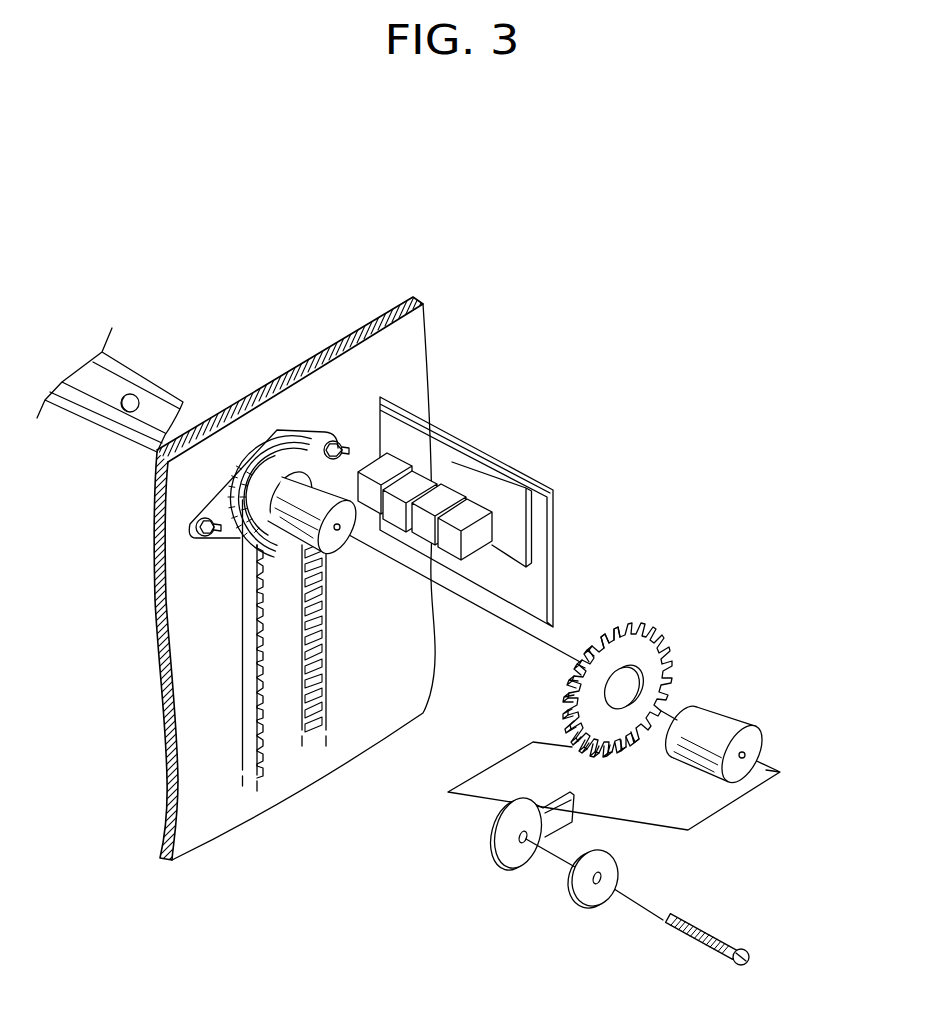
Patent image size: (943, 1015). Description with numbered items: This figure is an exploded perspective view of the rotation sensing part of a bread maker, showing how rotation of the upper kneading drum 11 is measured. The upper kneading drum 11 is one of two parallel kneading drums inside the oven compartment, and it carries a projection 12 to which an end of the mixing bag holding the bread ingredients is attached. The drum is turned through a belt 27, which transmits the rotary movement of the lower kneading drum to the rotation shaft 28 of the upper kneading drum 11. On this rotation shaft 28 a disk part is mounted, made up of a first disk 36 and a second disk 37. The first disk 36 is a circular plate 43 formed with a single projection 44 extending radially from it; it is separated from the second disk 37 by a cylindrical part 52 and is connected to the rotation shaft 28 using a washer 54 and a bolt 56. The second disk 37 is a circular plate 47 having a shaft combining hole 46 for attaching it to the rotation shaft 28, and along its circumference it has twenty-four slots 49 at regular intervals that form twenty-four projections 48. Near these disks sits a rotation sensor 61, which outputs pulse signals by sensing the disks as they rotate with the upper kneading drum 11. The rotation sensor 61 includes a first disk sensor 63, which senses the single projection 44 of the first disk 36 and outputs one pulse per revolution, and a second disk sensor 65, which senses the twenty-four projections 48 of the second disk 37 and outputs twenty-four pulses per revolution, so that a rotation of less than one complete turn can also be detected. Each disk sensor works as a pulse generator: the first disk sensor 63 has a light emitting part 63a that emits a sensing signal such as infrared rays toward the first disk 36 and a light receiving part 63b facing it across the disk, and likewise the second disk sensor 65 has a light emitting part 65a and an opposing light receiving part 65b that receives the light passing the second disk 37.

The upper kneading drum 11 is at (112, 357).
The projection 12 is at (136, 398).
The belt 27 is at (242, 642).
The rotation shaft 28 is at (269, 493).
The first disk 36 is at (520, 901).
The second disk 37 is at (646, 634).
The circular plate 43 is at (512, 867).
The single projection 44 is at (568, 824).
The shaft combining hole 46 is at (640, 675).
The circular plate 47 is at (647, 652).
The projections 48 is at (634, 630).
The slots 49 is at (616, 628).
The cylindrical part 52 is at (745, 723).
The washer 54 is at (603, 897).
The bolt 56 is at (722, 937).
The rotation sensor 61 is at (491, 471).
The first disk sensor 63 is at (518, 469).
The light emitting part 63a is at (480, 506).
The light receiving part 63b is at (453, 493).
The second disk sensor 65 is at (448, 430).
The light emitting part 65a is at (418, 482).
The light receiving part 65b is at (382, 465).